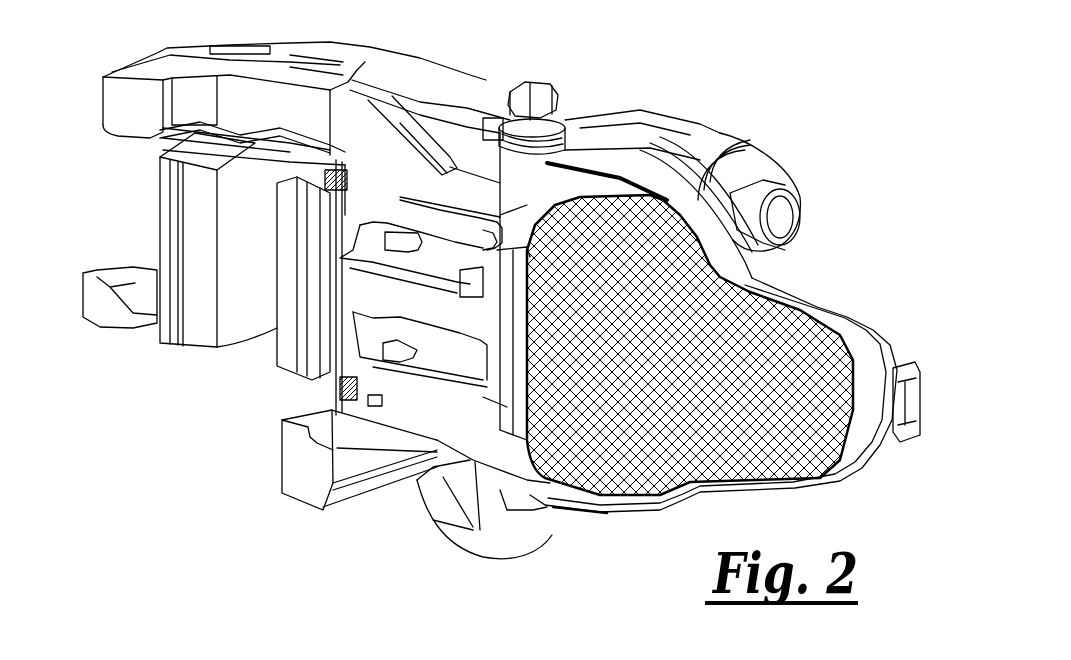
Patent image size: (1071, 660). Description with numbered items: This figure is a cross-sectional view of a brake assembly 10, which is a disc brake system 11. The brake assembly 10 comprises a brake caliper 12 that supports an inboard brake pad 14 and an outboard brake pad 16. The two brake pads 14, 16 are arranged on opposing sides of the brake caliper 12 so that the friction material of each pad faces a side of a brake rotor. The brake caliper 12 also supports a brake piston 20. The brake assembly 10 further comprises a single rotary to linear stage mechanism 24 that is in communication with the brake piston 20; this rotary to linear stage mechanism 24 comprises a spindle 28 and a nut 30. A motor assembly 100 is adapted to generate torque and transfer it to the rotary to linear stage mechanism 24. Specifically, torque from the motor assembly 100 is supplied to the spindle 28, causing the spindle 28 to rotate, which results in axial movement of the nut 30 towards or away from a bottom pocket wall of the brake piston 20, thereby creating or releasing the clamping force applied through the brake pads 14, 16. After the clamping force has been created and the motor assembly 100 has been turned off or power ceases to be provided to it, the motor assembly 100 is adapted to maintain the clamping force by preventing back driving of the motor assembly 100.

The brake assembly 10 is at (485, 279).
The disc brake system 11 is at (485, 279).
The brake caliper 12 is at (511, 300).
The inboard brake pad 14 is at (290, 346).
The outboard brake pad 16 is at (200, 242).
The brake piston 20 is at (390, 213).
The rotary to linear stage mechanism 24 is at (425, 256).
The spindle 28 is at (500, 284).
The nut 30 is at (443, 277).
The motor assembly 100 is at (795, 304).